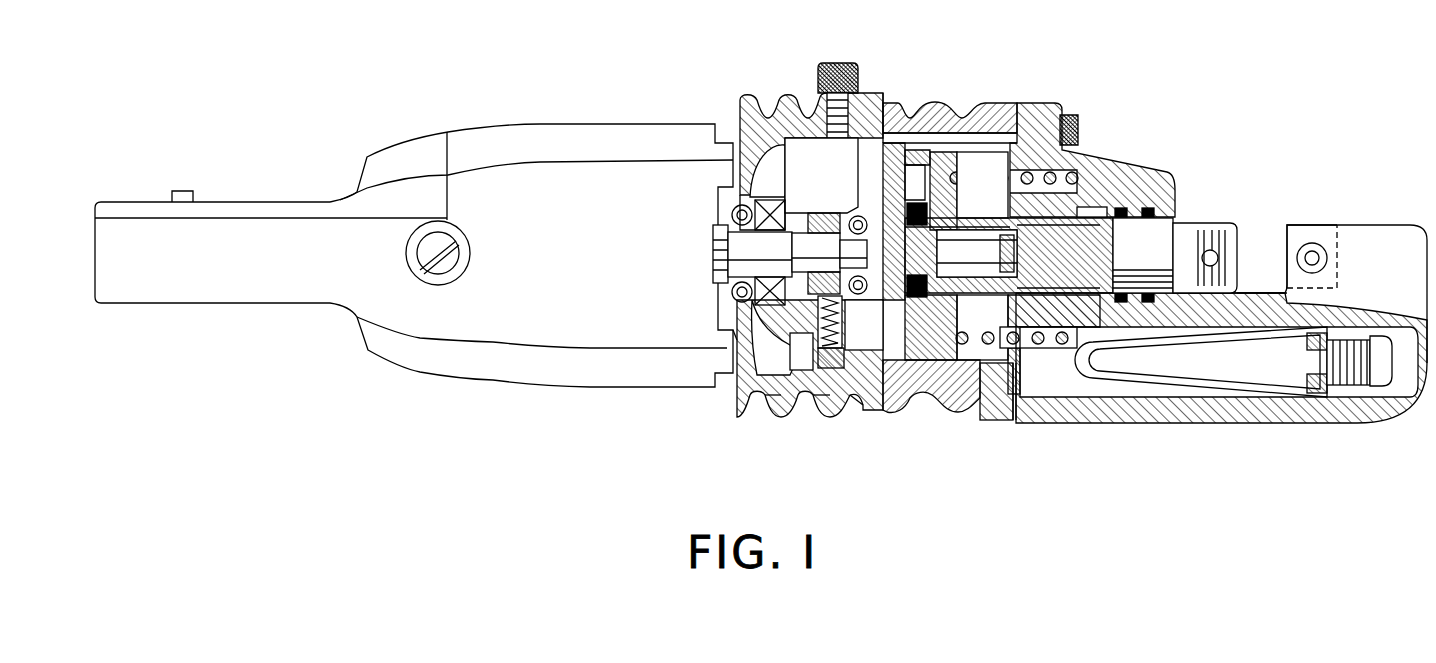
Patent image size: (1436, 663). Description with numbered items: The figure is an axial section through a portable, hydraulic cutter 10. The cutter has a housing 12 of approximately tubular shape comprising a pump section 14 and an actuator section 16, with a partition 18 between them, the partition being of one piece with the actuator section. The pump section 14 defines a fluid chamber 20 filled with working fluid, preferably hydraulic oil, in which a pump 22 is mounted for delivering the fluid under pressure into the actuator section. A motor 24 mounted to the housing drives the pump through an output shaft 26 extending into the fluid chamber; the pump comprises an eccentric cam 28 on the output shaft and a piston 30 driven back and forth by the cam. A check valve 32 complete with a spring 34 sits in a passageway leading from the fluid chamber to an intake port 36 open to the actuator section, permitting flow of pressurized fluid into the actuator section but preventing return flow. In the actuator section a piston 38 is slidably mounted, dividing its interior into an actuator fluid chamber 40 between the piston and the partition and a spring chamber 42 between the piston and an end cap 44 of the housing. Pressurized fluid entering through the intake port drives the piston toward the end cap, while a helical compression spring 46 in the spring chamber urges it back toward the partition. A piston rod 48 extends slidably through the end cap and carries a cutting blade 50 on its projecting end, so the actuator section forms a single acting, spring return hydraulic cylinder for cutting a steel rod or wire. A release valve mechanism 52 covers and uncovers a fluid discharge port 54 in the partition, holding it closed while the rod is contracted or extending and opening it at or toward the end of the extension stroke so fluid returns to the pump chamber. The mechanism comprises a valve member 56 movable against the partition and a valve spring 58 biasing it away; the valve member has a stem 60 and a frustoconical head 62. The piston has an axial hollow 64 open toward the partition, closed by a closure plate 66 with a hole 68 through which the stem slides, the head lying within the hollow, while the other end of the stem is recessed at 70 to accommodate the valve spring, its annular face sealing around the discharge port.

The portable hydraulic cutter 10 is at (478, 108).
The housing 12 is at (733, 93).
The pump section 14 is at (780, 92).
The actuator section 16 is at (940, 104).
The partition 18 is at (915, 118).
The fluid chamber 20 is at (740, 372).
The pump 22 is at (730, 336).
The motor 24 is at (588, 172).
The output shaft 26 is at (713, 248).
The eccentric cam 28 is at (800, 237).
The piston 30 is at (843, 322).
The check valve 32 is at (826, 395).
The spring 34 is at (782, 393).
The intake port 36 is at (852, 400).
The piston 38 is at (955, 150).
The actuator fluid chamber 40 is at (920, 392).
The spring chamber 42 is at (975, 405).
The end cap 44 is at (1125, 160).
The helical compression spring 46 is at (980, 170).
The piston rod 48 is at (1160, 238).
The cutting blade 50 is at (1232, 240).
The release valve mechanism 52 is at (982, 185).
The fluid discharge port 54 is at (908, 215).
The valve member 56 is at (1015, 290).
The valve spring 58 is at (985, 335).
The stem 60 is at (1020, 250).
The head 62 is at (1030, 270).
The hollow 64 is at (1015, 347).
The closure plate 66 is at (910, 180).
The hole 68 is at (1000, 258).
The recess 70 is at (870, 325).